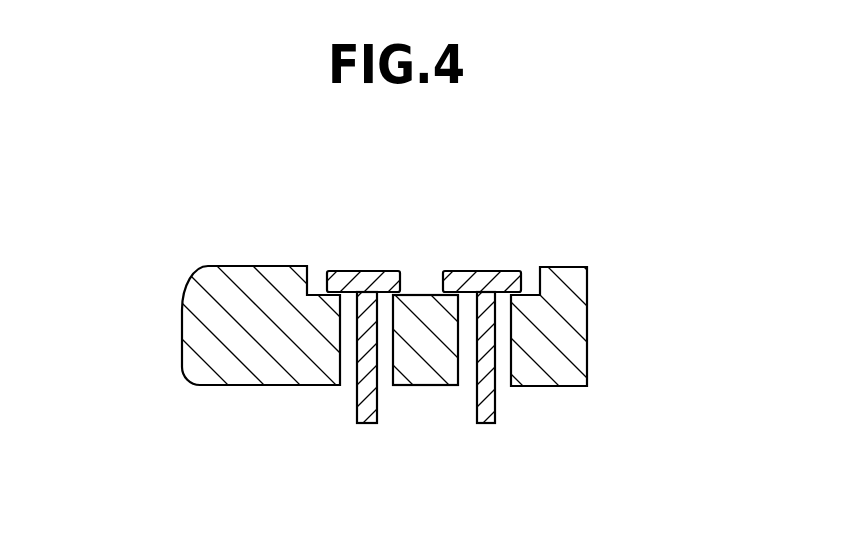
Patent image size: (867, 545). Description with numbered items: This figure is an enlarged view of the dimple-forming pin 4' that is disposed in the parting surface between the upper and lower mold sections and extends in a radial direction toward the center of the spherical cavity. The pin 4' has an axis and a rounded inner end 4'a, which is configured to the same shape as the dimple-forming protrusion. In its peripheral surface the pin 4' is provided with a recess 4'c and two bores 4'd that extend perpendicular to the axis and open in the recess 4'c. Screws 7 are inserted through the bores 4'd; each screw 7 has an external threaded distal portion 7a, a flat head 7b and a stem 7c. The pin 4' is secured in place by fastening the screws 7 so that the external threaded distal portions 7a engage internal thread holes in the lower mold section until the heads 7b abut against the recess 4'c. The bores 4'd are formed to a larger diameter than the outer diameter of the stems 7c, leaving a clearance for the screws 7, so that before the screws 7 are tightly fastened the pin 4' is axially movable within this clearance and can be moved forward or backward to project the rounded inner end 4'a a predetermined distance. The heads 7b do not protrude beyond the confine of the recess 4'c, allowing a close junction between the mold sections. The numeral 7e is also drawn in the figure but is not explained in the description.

The dimple-forming pin 4' is at (380, 313).
The rounded inner end 4'a is at (215, 325).
The recess 4'c is at (425, 261).
The bore 4'd is at (527, 420).
The screw 7 is at (414, 318).
The external threaded distal portion 7a is at (357, 406).
The flat head 7b is at (367, 282).
The stem 7c is at (367, 335).
The screw neck portion 7e is at (487, 333).